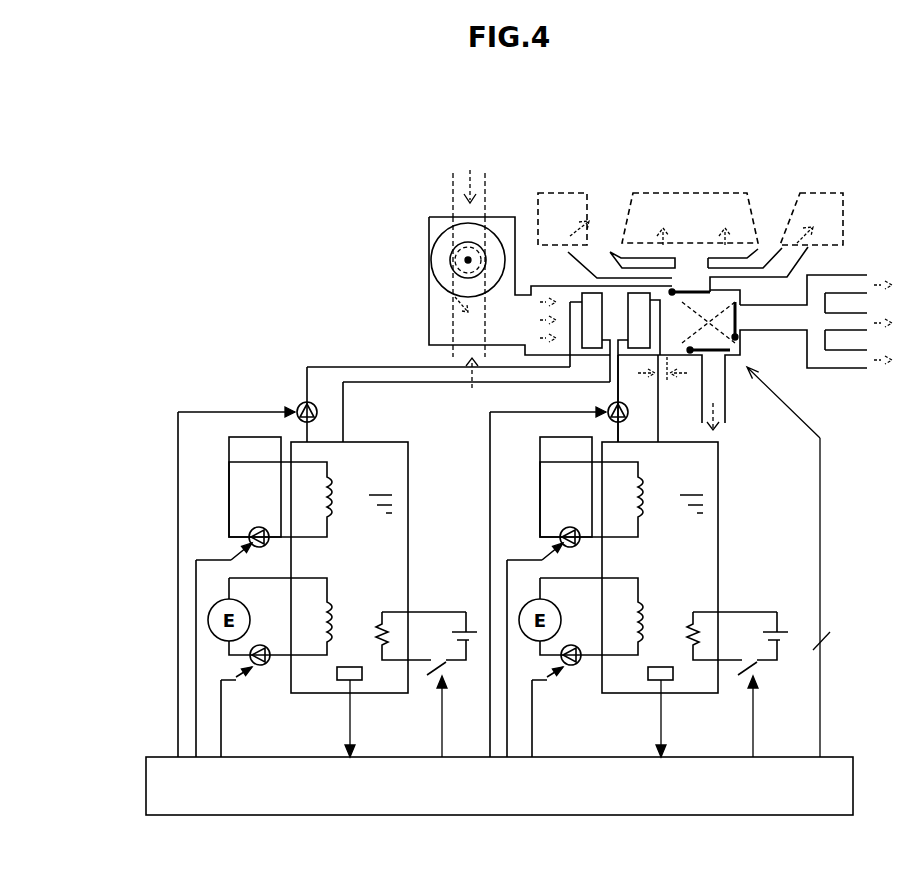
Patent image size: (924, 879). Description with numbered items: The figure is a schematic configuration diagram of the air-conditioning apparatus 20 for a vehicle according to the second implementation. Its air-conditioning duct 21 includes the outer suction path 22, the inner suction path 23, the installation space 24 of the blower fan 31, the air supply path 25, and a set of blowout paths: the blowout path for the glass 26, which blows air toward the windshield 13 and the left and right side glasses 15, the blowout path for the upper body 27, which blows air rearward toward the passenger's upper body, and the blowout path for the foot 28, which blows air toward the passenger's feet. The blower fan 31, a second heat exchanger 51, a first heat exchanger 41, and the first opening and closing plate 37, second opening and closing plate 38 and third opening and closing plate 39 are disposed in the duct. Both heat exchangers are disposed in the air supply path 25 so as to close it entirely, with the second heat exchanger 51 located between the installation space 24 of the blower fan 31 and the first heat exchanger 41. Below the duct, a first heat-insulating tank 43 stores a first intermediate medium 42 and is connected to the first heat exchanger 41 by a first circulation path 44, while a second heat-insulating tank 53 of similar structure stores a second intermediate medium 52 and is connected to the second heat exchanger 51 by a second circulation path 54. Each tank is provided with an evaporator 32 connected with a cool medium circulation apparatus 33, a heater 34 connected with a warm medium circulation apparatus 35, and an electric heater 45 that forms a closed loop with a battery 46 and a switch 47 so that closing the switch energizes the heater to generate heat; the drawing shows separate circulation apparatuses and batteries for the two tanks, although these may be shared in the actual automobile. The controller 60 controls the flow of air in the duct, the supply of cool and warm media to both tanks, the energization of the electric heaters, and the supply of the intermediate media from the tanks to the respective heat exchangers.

The windshield 13 is at (705, 222).
The side glass 15 is at (563, 220).
The air-conditioning apparatus for a vehicle 20 is at (175, 268).
The air-conditioning duct 21 is at (427, 281).
The outer suction path 22 is at (462, 208).
The inner suction path 23 is at (450, 347).
The installation space of the blower fan 24 is at (440, 317).
The air supply path 25 is at (545, 295).
The blowout path for the glass 26 is at (722, 280).
The blowout path for the upper body 27 is at (800, 332).
The blowout path for the foot 28 is at (735, 412).
The blower fan 31 is at (443, 258).
The evaporator 32 is at (330, 490).
The cool medium circulation apparatus 33 is at (229, 443).
The heater 34 is at (330, 607).
The warm medium circulation apparatus 35 is at (276, 660).
The first opening and closing plate 37 is at (700, 287).
The second opening and closing plate 38 is at (738, 325).
The third opening and closing plate 39 is at (702, 393).
The first heat exchanger 41 is at (640, 303).
The first intermediate medium 42 is at (713, 510).
The first heat-insulating tank 43 is at (718, 560).
The first circulation path 44 is at (658, 432).
The electric heater 45 is at (389, 638).
The battery 46 is at (465, 627).
The switch 47 is at (445, 665).
The second heat exchanger 51 is at (597, 303).
The second intermediate medium 52 is at (402, 510).
The second heat-insulating tank 53 is at (408, 560).
The second circulation path 54 is at (343, 430).
The controller 60 is at (850, 757).